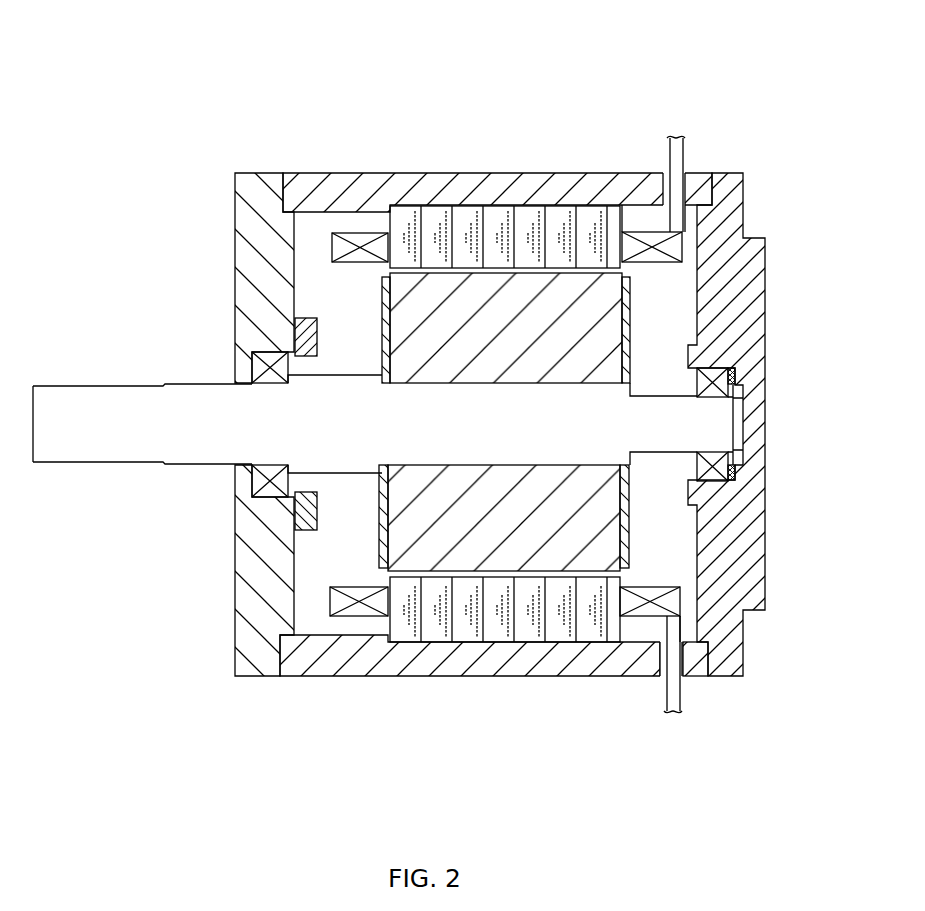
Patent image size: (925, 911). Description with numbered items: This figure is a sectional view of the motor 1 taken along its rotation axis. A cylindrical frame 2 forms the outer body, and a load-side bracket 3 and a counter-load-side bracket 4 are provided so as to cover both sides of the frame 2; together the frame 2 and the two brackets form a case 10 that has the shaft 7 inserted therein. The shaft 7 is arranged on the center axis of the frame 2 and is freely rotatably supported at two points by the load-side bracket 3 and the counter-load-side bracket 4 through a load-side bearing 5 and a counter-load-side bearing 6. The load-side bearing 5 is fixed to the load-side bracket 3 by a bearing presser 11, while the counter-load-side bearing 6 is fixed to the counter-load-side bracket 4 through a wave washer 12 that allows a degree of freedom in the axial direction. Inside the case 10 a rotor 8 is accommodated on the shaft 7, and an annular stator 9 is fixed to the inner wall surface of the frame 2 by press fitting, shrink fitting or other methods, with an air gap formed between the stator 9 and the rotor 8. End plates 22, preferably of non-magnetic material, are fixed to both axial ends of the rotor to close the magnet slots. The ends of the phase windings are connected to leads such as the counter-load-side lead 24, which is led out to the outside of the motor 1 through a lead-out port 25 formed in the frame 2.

The motor 1 is at (431, 381).
The frame 2 is at (338, 187).
The load-side bracket 3 is at (242, 592).
The counter-load-side bracket 4 is at (745, 558).
The load-side bearing 5 is at (257, 367).
The counter-load-side bearing 6 is at (738, 386).
The shaft 7 is at (56, 445).
The rotor 8 is at (493, 540).
The stator 9 is at (504, 250).
The case 10 is at (418, 685).
The bearing presser 11 is at (300, 513).
The wave washer 12 is at (738, 468).
The end plates 22 is at (382, 302).
The counter-load-side lead 24 is at (665, 688).
The lead-out port 25 is at (682, 663).